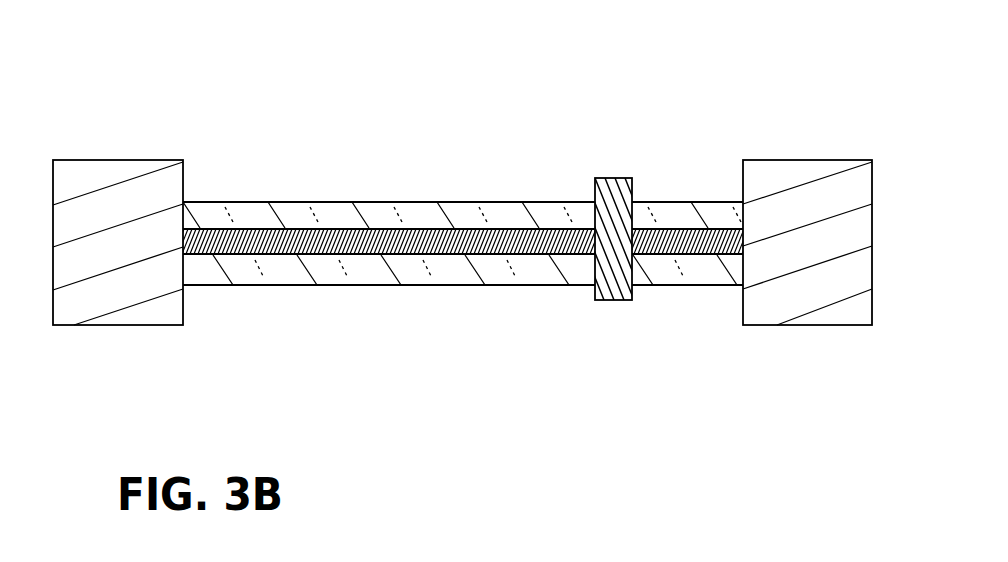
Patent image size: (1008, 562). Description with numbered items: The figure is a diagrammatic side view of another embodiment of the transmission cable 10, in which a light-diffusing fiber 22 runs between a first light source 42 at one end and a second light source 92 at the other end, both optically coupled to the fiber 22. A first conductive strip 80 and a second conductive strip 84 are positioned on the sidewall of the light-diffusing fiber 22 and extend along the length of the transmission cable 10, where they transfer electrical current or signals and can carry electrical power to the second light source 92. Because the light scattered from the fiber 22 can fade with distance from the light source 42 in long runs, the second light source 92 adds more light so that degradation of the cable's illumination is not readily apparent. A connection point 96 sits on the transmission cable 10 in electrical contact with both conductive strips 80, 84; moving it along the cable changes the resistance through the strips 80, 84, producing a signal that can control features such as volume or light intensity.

The transmission cable 10 is at (276, 146).
The light-diffusing fiber 22 is at (383, 212).
The light source 42 is at (107, 200).
The first conductive strip 80 is at (461, 292).
The second conductive strip 84 is at (434, 245).
The second light source 92 is at (795, 200).
The connection point 96 is at (621, 188).